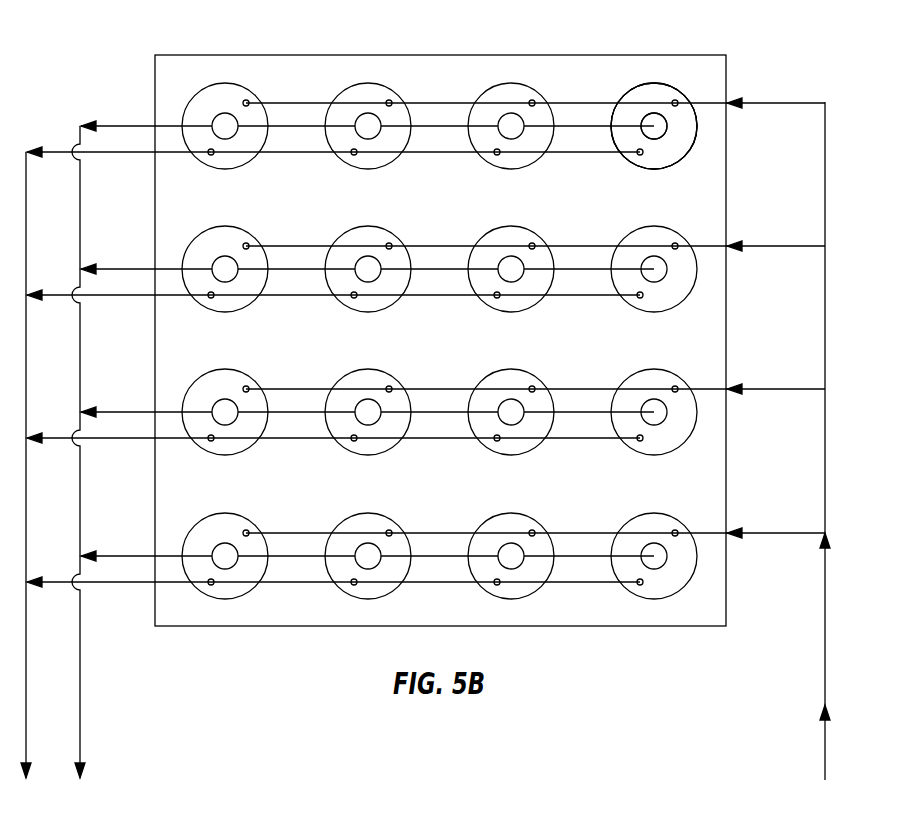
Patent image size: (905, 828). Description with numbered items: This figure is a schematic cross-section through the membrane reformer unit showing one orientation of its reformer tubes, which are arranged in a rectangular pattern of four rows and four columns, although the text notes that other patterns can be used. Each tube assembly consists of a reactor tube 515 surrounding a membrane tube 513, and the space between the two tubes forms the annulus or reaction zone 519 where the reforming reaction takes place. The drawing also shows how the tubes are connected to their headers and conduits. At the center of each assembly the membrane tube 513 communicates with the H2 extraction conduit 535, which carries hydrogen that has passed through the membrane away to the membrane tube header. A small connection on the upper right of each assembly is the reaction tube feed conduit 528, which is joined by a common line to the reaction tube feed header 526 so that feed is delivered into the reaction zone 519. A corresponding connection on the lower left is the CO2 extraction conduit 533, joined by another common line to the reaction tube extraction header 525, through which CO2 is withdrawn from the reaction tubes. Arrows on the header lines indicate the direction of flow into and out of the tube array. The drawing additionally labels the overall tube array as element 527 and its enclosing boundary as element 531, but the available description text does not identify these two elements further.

The membrane tube 513 is at (670, 132).
The reactor tube 515 is at (657, 90).
The annulus or reaction zone 519 is at (683, 115).
The reaction tube extraction header 525 is at (192, 154).
The reaction tube feed header 526 is at (240, 86).
The pixel array 527 is at (707, 442).
The reaction tube feed conduit 528 is at (678, 533).
The substrate 531 is at (483, 55).
The CO2 extraction conduit 533 is at (641, 585).
The H2 extraction conduit 535 is at (657, 543).